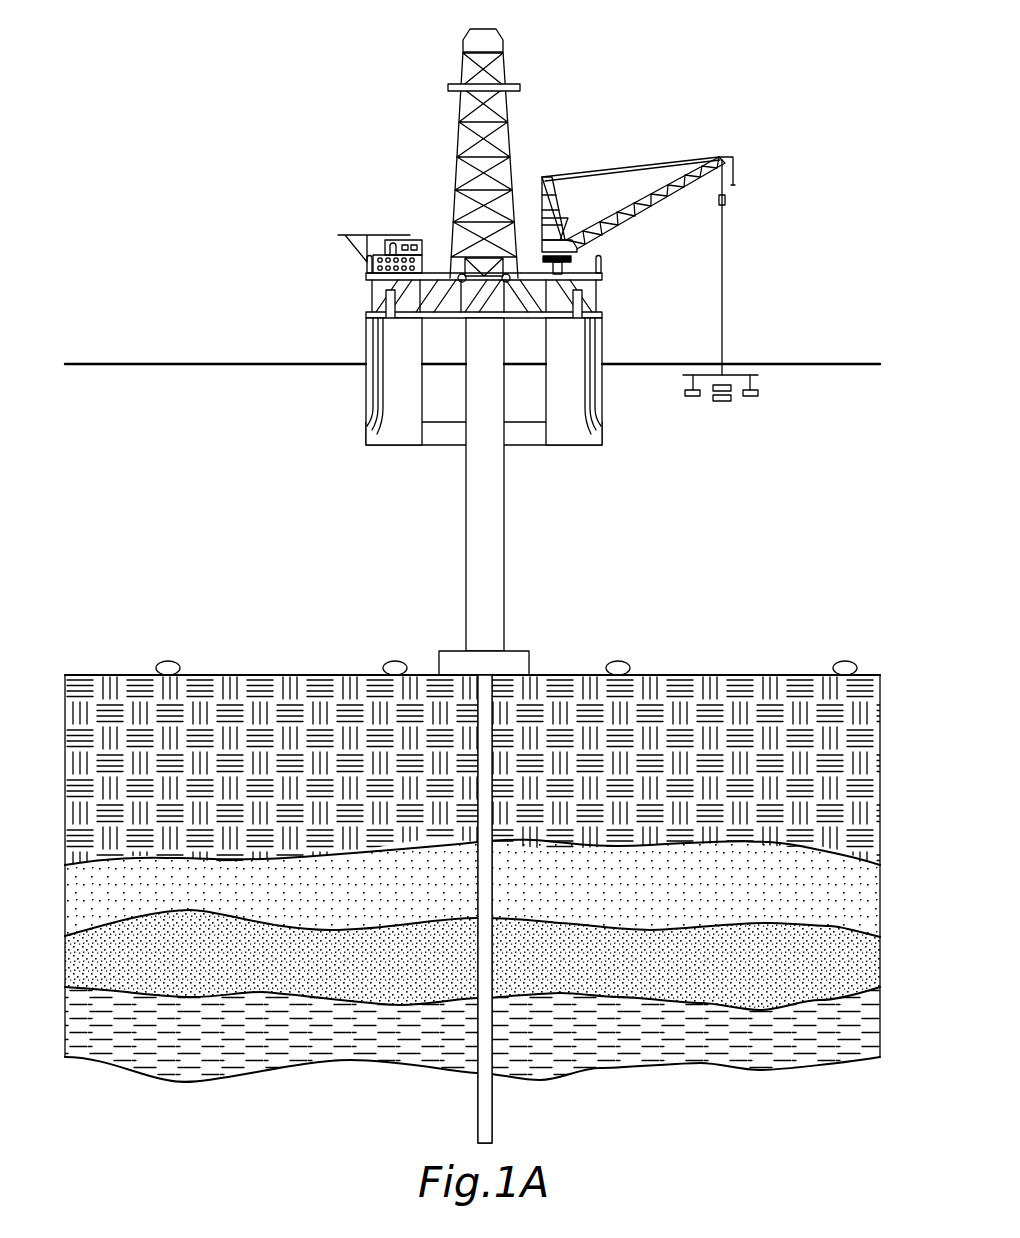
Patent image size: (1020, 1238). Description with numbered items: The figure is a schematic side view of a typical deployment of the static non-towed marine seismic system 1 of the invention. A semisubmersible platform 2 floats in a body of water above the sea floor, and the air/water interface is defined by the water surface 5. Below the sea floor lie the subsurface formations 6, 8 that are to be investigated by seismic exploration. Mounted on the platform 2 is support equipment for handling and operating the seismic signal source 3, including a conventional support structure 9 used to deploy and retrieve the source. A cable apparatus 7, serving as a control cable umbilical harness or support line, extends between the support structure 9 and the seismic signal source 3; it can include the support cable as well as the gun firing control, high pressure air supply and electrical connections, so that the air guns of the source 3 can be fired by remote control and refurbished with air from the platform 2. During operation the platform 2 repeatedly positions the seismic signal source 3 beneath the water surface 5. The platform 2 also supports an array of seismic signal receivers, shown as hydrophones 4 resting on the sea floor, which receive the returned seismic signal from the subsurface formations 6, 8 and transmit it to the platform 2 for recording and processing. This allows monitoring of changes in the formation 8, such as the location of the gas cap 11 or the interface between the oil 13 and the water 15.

The static non-towed marine seismic system 1 is at (574, 140).
The semisubmersible platform 2 is at (366, 315).
The seismic signal source 3 is at (722, 402).
The hydrophones 4 is at (845, 661).
The water surface 5 is at (838, 362).
The subsurface formation 6 is at (768, 756).
The cable apparatus 7 is at (722, 262).
The subsurface formation 8 is at (885, 865).
The support structure 9 is at (682, 163).
The gas cap 11 is at (770, 893).
The oil 13 is at (770, 979).
The water 15 is at (814, 1049).